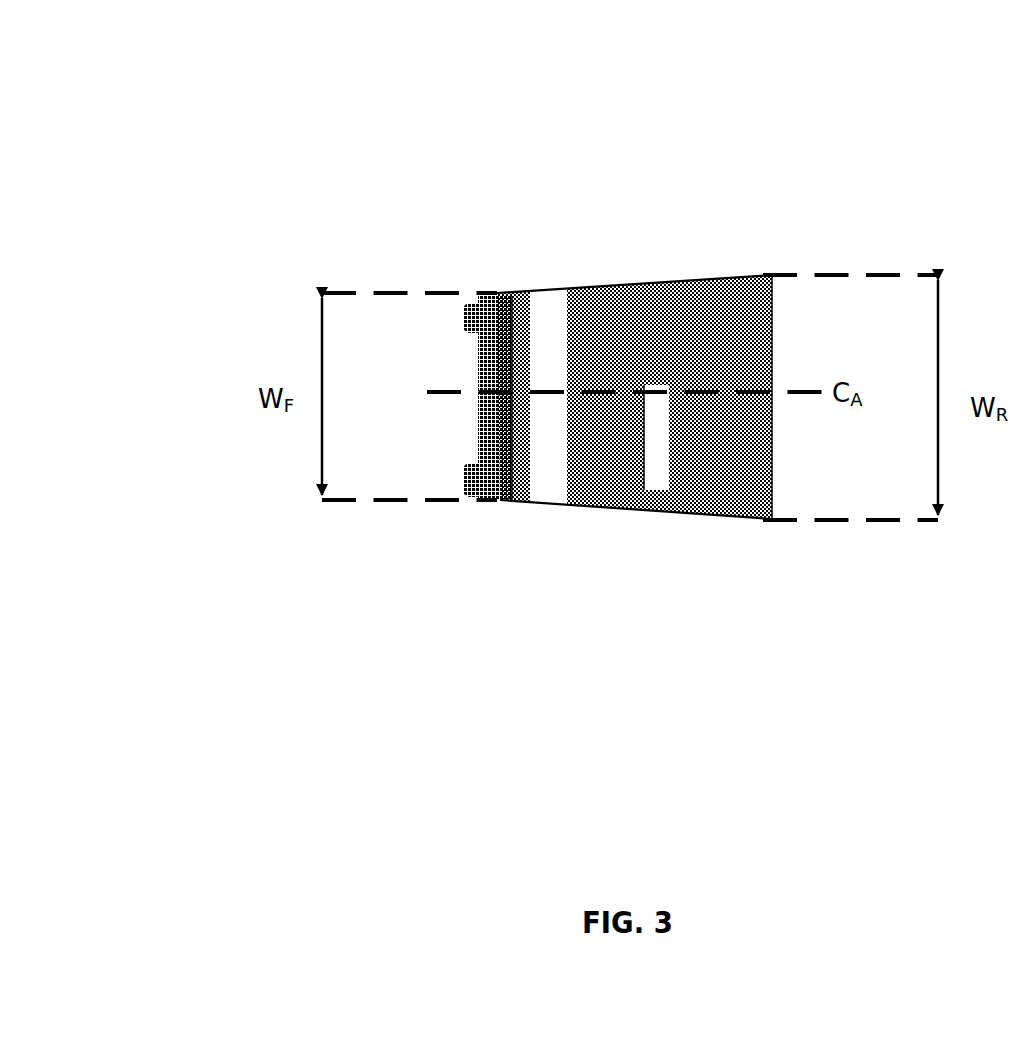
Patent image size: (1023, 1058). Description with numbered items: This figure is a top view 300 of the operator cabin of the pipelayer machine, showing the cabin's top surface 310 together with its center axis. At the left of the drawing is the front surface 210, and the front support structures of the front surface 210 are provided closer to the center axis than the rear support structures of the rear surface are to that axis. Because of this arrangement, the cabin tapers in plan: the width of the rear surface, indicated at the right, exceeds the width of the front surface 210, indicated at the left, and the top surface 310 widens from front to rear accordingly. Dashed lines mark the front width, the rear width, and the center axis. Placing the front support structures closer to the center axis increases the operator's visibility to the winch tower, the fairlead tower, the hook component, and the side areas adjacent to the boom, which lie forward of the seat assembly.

The cooking tool / spatula assembly 300 is at (140, 40).
The top surface 310 is at (681, 310).
The front surface 210 is at (500, 437).